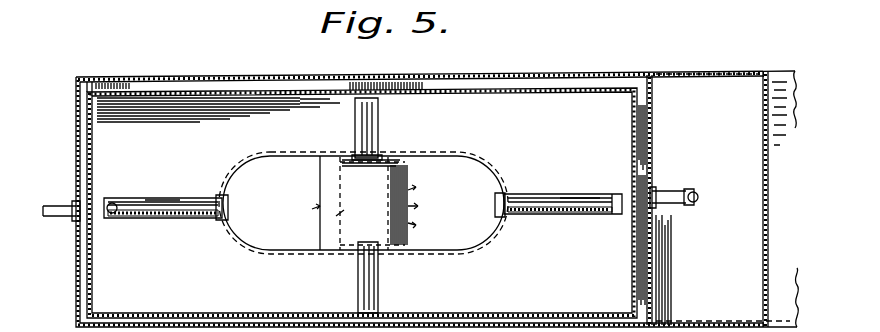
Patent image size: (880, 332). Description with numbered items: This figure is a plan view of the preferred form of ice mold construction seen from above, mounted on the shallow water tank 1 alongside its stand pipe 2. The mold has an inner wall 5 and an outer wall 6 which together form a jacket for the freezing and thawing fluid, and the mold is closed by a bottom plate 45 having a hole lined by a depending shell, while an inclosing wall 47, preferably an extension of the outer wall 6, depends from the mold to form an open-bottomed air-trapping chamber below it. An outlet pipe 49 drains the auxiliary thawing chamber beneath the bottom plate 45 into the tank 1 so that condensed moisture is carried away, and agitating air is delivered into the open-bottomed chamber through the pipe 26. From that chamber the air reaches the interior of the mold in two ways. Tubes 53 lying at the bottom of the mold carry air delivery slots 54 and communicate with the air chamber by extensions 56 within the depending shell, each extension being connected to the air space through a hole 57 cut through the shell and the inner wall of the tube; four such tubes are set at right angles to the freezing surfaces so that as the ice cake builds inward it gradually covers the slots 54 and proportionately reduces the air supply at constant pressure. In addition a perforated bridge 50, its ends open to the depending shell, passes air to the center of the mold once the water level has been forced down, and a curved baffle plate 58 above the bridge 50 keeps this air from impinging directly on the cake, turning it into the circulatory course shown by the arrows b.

The shallow water tank 1 is at (718, 199).
The stand pipe 2 is at (764, 230).
The inner mold wall 5 is at (96, 163).
The outer mold wall 6 is at (80, 140).
The air pipe 26 is at (56, 216).
The bottom plate 45 is at (388, 203).
The inclosing wall 47 is at (660, 153).
The outlet pipe 49 is at (110, 220).
The bridge 50 is at (414, 200).
The slotted tube 53 is at (186, 218).
The air delivery slot 54 is at (147, 198).
The tube extension 56 is at (229, 210).
The hole 57 is at (372, 203).
The baffle plate 58 is at (318, 183).
The arrows b is at (312, 210).